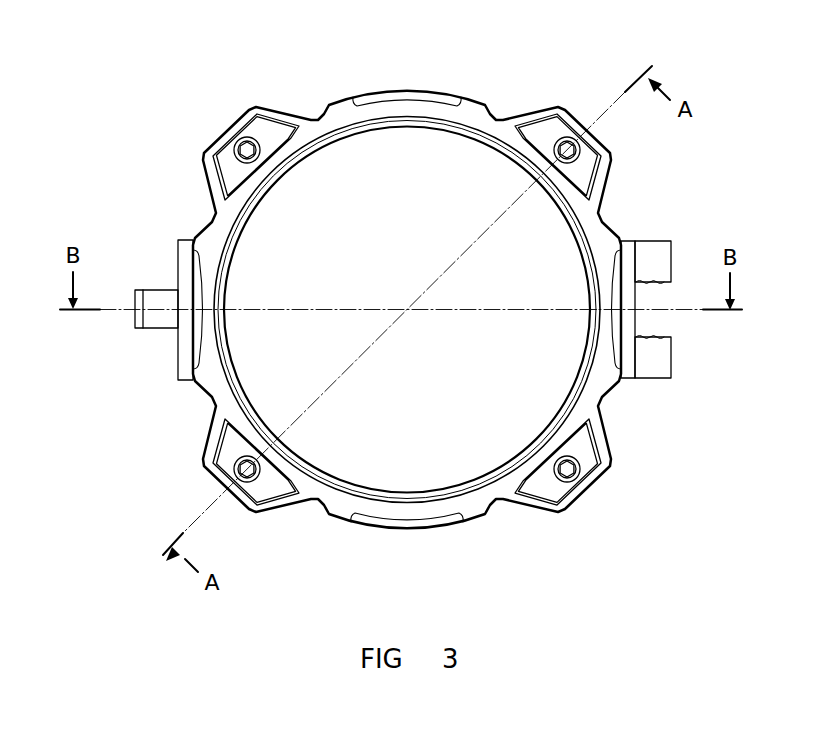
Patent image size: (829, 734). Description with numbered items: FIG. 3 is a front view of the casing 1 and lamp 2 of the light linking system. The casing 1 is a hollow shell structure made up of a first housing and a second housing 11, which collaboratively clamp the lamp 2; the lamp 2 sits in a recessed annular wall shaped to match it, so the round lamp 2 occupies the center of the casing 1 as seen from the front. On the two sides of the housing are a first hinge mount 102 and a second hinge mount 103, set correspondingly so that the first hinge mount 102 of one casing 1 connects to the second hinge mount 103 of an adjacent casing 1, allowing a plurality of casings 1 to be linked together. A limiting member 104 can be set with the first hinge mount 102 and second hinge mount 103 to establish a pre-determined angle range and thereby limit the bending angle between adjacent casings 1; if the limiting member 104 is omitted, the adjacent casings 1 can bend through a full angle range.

The casing 1 is at (478, 118).
The lamp 2 is at (355, 205).
The second housing 11 is at (335, 500).
The first hinge mount 102 is at (657, 250).
The second hinge mount 103 is at (153, 293).
The limiting member 104 is at (185, 373).